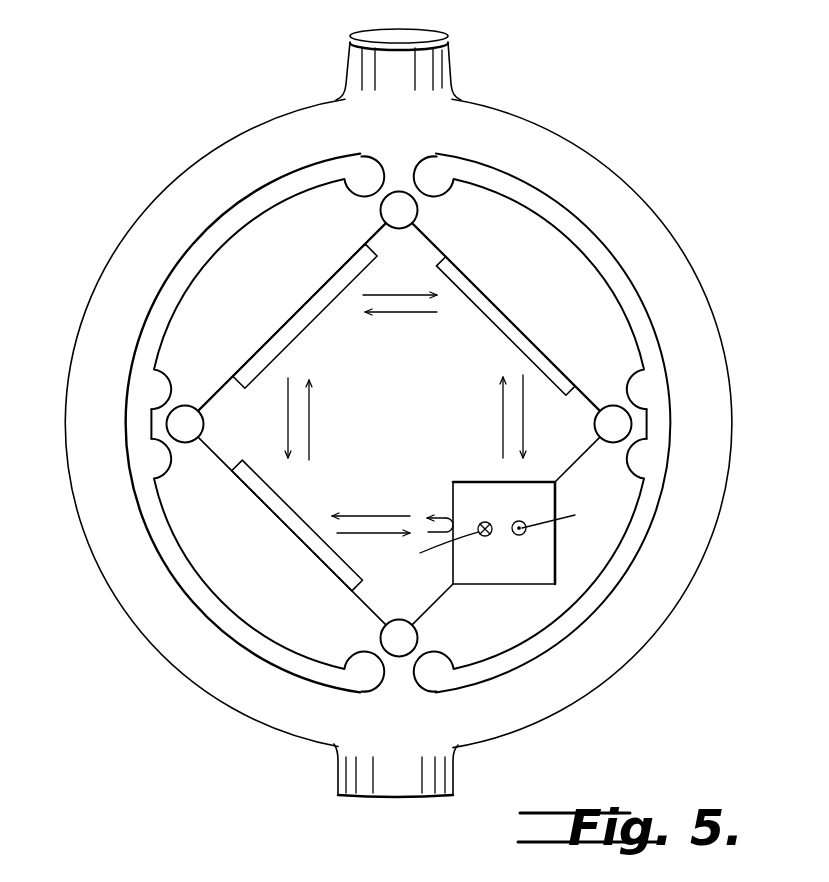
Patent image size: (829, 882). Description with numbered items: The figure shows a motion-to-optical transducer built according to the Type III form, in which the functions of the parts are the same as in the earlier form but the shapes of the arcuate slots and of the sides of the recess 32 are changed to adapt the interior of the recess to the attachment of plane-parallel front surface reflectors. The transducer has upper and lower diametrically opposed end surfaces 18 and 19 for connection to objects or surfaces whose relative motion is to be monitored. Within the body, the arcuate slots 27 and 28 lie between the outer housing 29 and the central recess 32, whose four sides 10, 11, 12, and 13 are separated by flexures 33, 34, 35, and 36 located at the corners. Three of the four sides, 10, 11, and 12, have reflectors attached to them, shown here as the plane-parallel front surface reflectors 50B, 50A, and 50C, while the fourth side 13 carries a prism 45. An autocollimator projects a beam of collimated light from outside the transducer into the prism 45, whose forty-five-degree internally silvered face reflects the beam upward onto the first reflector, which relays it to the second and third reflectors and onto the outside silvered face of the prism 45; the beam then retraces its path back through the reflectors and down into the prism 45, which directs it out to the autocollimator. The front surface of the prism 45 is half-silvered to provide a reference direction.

The side 10 is at (257, 557).
The side 11 is at (275, 268).
The side 12 is at (537, 268).
The fourth side 13 is at (600, 550).
The upper end surface 18 is at (432, 57).
The lower end surface 19 is at (350, 777).
The arcuate passage 27 is at (253, 196).
The arcuate passage 28 is at (635, 307).
The housing 29 is at (590, 180).
The recess 32 is at (404, 381).
The flexure 33 is at (153, 412).
The flexure 34 is at (642, 425).
The flexure 35 is at (418, 655).
The flexure 36 is at (380, 193).
The prism 45 is at (526, 570).
The vane 50A is at (492, 318).
The vane 50B is at (300, 328).
The vane 50C is at (297, 513).